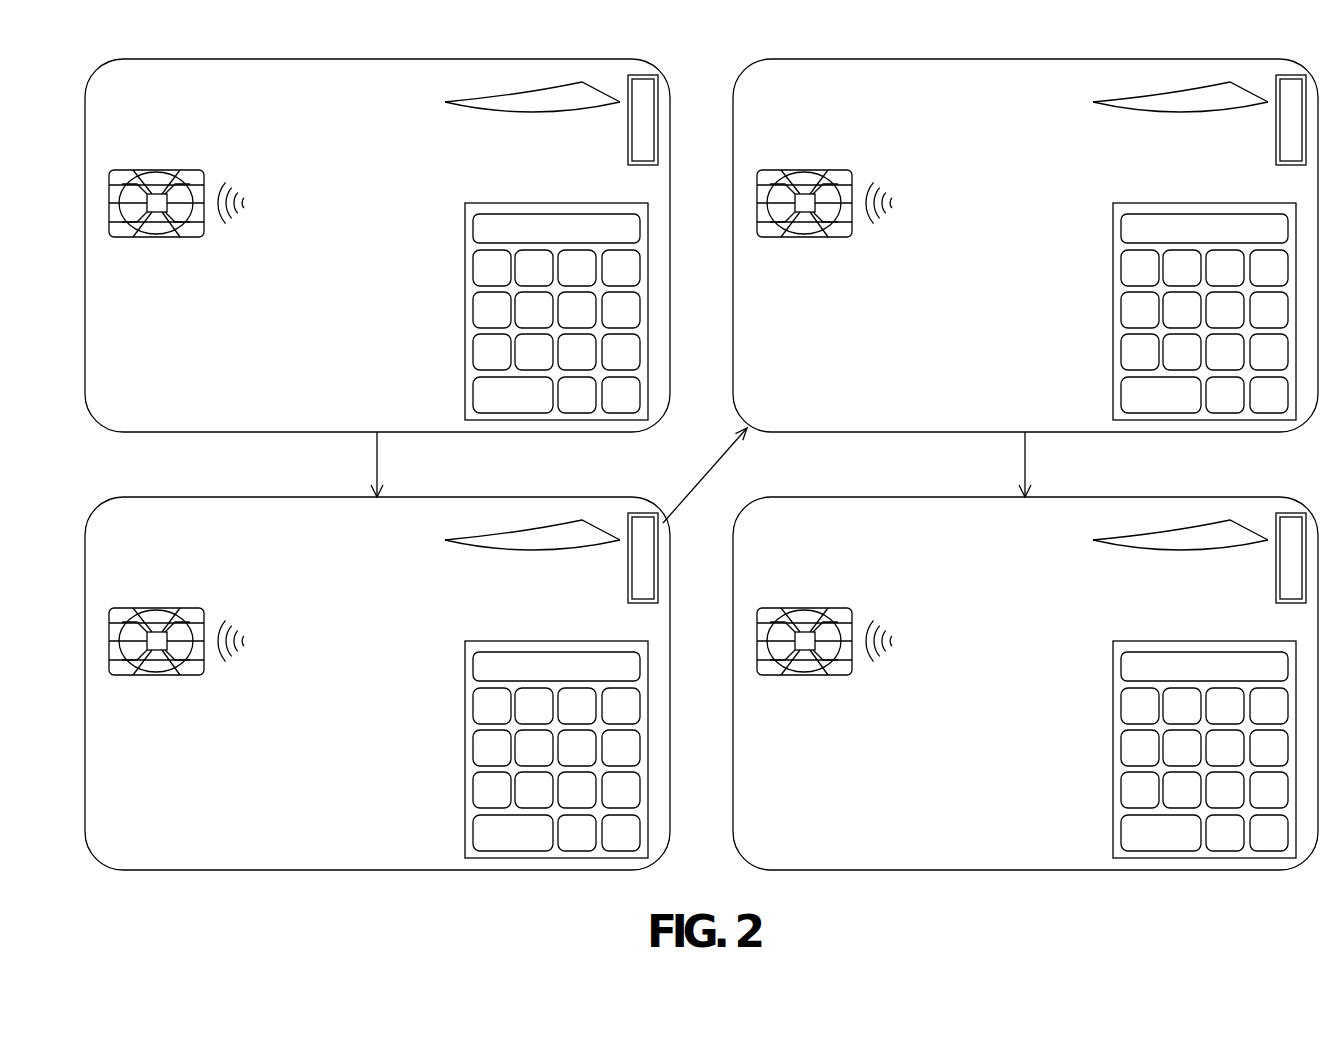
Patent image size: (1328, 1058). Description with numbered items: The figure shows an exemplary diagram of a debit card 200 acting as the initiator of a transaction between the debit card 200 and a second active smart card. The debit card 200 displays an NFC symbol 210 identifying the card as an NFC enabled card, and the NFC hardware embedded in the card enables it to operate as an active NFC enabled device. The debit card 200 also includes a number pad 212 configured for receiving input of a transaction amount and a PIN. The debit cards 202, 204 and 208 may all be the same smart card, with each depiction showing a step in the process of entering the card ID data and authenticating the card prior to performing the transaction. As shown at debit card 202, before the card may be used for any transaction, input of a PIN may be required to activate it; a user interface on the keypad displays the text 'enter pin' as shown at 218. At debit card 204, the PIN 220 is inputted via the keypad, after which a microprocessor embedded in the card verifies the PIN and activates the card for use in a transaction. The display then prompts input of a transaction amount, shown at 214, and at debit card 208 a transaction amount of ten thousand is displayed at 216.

The debit card 200 is at (1025, 229).
The debit card (PIN entry step) 202 is at (377, 229).
The debit card (PIN inputted step) 204 is at (377, 667).
The debit card (transaction amount displayed step) 208 is at (1025, 667).
The NFC symbol 210 is at (916, 201).
The number pad 212 is at (1167, 294).
The transaction amount prompt 214 is at (1204, 207).
The displayed transaction amount 216 is at (1204, 645).
The 'enter pin' text 218 is at (556, 212).
The PIN 220 is at (556, 646).